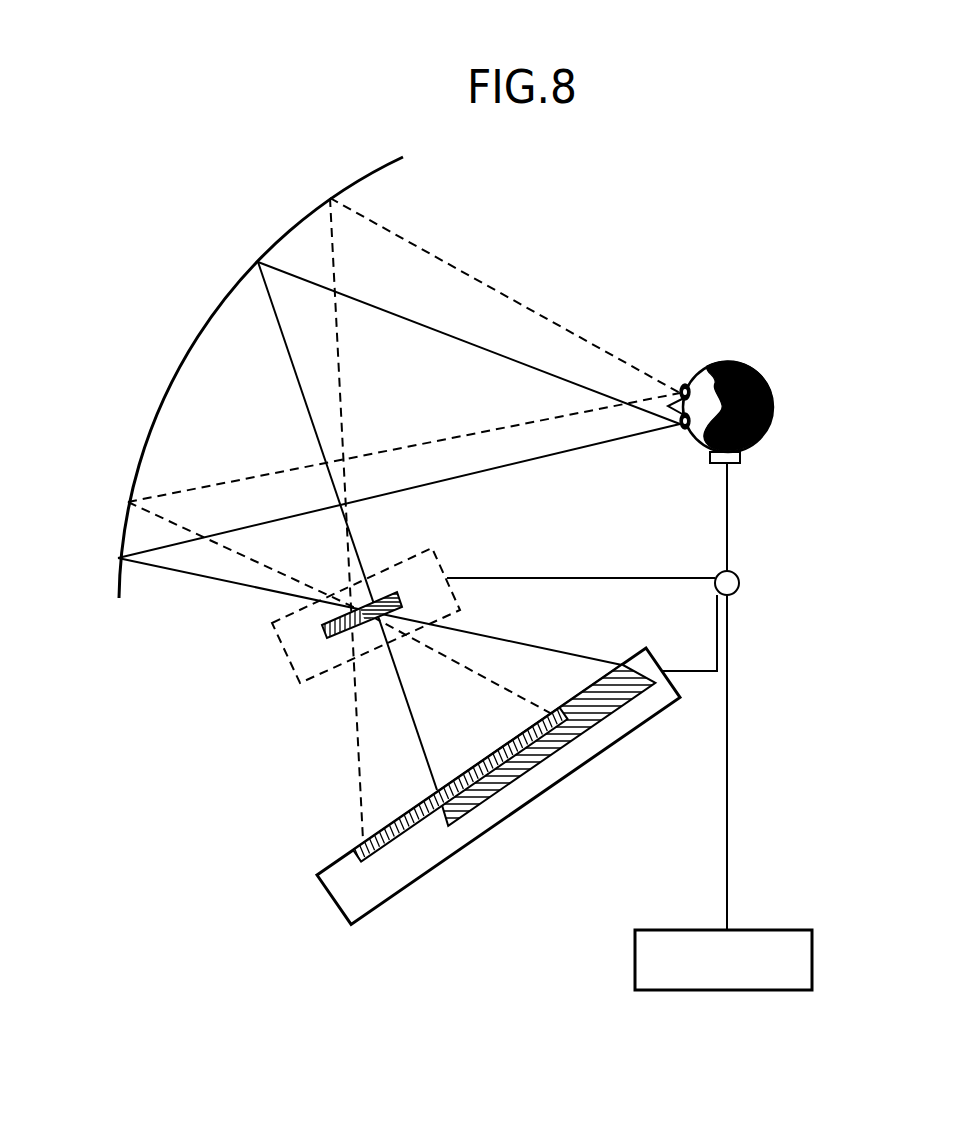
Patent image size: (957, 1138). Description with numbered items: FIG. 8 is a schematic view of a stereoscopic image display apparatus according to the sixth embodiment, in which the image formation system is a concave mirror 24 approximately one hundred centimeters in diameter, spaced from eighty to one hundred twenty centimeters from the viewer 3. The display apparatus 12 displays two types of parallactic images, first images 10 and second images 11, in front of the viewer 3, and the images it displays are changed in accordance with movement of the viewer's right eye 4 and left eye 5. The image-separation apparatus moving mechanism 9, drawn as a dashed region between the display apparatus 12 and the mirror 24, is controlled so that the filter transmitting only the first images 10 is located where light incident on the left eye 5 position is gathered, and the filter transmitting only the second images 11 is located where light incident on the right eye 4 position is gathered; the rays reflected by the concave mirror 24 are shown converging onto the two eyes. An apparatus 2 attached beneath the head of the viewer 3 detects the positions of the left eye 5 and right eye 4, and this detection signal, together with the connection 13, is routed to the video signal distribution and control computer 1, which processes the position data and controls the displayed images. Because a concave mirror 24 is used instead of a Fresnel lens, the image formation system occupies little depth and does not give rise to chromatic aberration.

The video signal distribution and control computer 1 is at (634, 952).
The apparatus that detects the positions of the left eye and right eye 2 is at (741, 463).
The viewer 3 is at (736, 362).
The right eye 4 is at (682, 386).
The left eye 5 is at (682, 432).
The image-separation apparatus moving mechanism 9 is at (442, 556).
The first images 10 is at (384, 826).
The second images 11 is at (620, 672).
The display apparatus 12 is at (322, 868).
The connector 13 is at (735, 572).
The concave mirror 24 is at (221, 310).